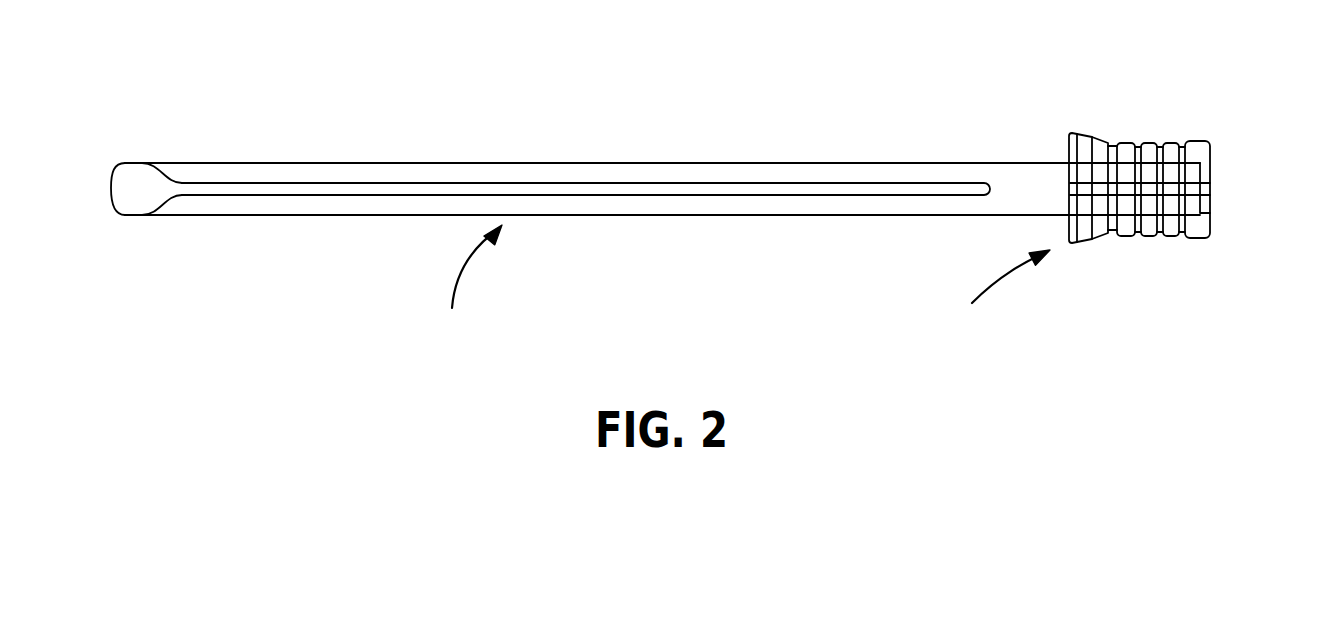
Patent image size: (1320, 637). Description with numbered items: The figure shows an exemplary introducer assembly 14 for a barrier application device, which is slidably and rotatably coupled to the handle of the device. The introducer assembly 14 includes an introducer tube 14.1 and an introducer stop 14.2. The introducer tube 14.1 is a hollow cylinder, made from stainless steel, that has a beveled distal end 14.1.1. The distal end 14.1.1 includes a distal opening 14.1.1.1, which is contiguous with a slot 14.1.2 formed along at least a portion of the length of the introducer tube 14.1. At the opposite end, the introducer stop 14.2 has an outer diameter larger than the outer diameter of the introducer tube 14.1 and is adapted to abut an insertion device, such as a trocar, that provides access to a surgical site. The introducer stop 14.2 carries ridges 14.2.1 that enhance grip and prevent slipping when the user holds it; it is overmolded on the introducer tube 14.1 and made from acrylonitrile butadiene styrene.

The introducer assembly 14 is at (1254, 133).
The introducer tube 14.1 is at (542, 163).
The distal end 14.1.1 is at (137, 163).
The distal opening 14.1.1.1 is at (135, 192).
The slot 14.1.2 is at (255, 193).
The introducer stop 14.2 is at (1108, 142).
The ridges 14.2.1 is at (1147, 145).